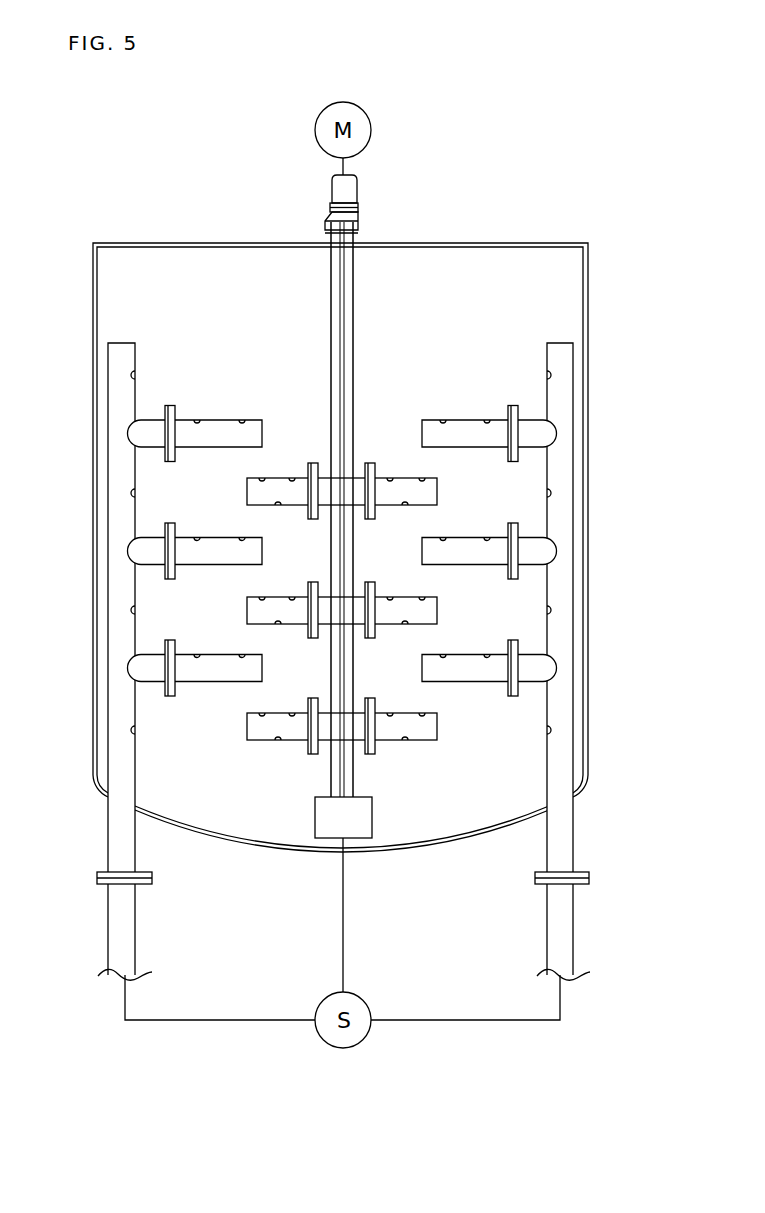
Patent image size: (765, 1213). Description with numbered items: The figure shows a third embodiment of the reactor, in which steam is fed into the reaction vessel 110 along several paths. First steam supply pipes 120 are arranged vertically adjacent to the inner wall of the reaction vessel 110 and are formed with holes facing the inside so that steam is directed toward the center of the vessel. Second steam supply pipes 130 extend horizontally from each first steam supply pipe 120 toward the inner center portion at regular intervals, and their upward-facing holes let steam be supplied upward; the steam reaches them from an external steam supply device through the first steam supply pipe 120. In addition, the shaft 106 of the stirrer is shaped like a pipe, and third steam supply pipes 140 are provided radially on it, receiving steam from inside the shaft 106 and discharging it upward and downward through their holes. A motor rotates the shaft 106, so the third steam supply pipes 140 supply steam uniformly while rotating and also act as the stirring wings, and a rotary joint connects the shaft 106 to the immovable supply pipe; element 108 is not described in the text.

The shaft 106 is at (348, 292).
The bearing / journal box 108 is at (373, 822).
The reaction vessel 110 is at (588, 383).
The first steam supply pipe 120 is at (563, 842).
The second steam supply pipe 130 is at (467, 653).
The third steam supply pipe 140 is at (287, 482).